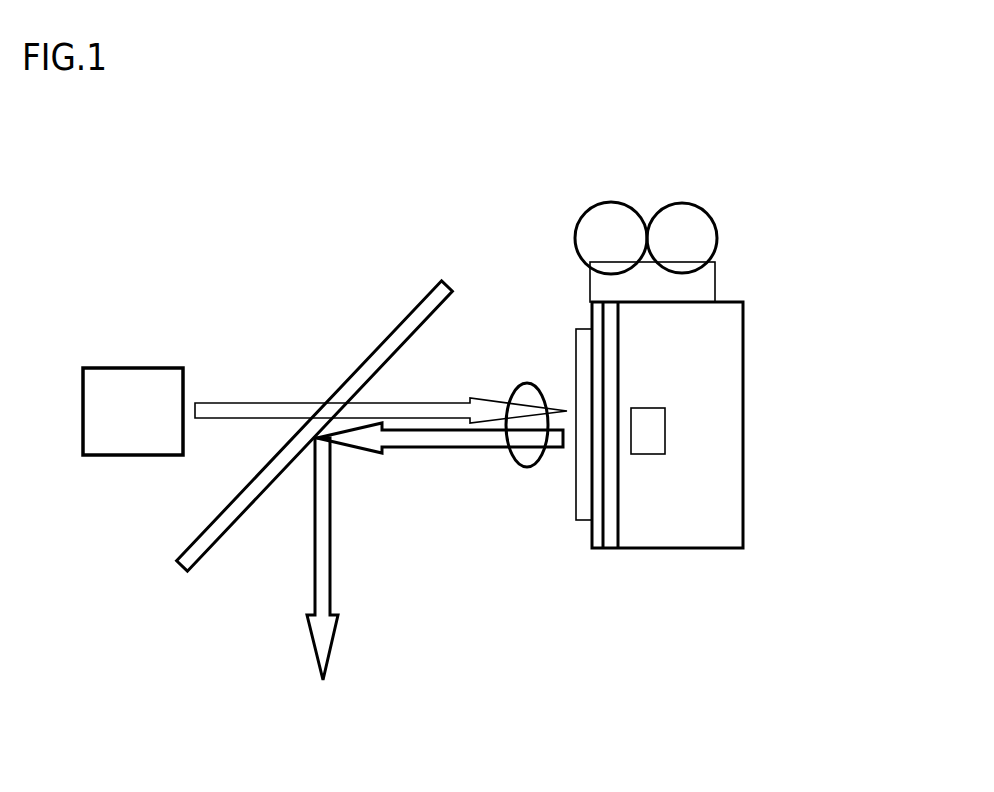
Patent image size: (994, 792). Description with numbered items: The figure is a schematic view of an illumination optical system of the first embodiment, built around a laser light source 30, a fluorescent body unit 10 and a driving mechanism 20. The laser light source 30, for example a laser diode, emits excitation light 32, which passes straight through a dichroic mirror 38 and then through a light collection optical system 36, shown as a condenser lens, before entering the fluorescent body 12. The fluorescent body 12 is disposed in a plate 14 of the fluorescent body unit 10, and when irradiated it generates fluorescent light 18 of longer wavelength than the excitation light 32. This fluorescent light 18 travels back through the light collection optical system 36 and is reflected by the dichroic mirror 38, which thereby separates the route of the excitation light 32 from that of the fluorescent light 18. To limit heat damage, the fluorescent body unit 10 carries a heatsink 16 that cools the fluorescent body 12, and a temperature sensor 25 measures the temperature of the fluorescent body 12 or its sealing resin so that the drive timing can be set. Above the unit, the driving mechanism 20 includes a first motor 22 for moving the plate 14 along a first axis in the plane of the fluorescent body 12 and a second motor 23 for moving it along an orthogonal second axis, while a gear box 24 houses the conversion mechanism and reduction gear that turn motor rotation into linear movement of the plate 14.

The fluorescent body unit 10 is at (664, 529).
The fluorescent body 12 is at (580, 512).
The plate 14 is at (597, 535).
The heatsink 16 is at (707, 518).
The fluorescent light 18 is at (320, 570).
The driving mechanism 20 is at (694, 188).
The first motor 22 is at (620, 220).
The second motor 23 is at (682, 206).
The gear box 24 is at (708, 285).
The temperature sensor 25 is at (653, 432).
The laser light source 30 is at (122, 377).
The excitation light 32 is at (257, 404).
The light collection optical system 36 is at (530, 467).
The dichroic mirror 38 is at (207, 528).